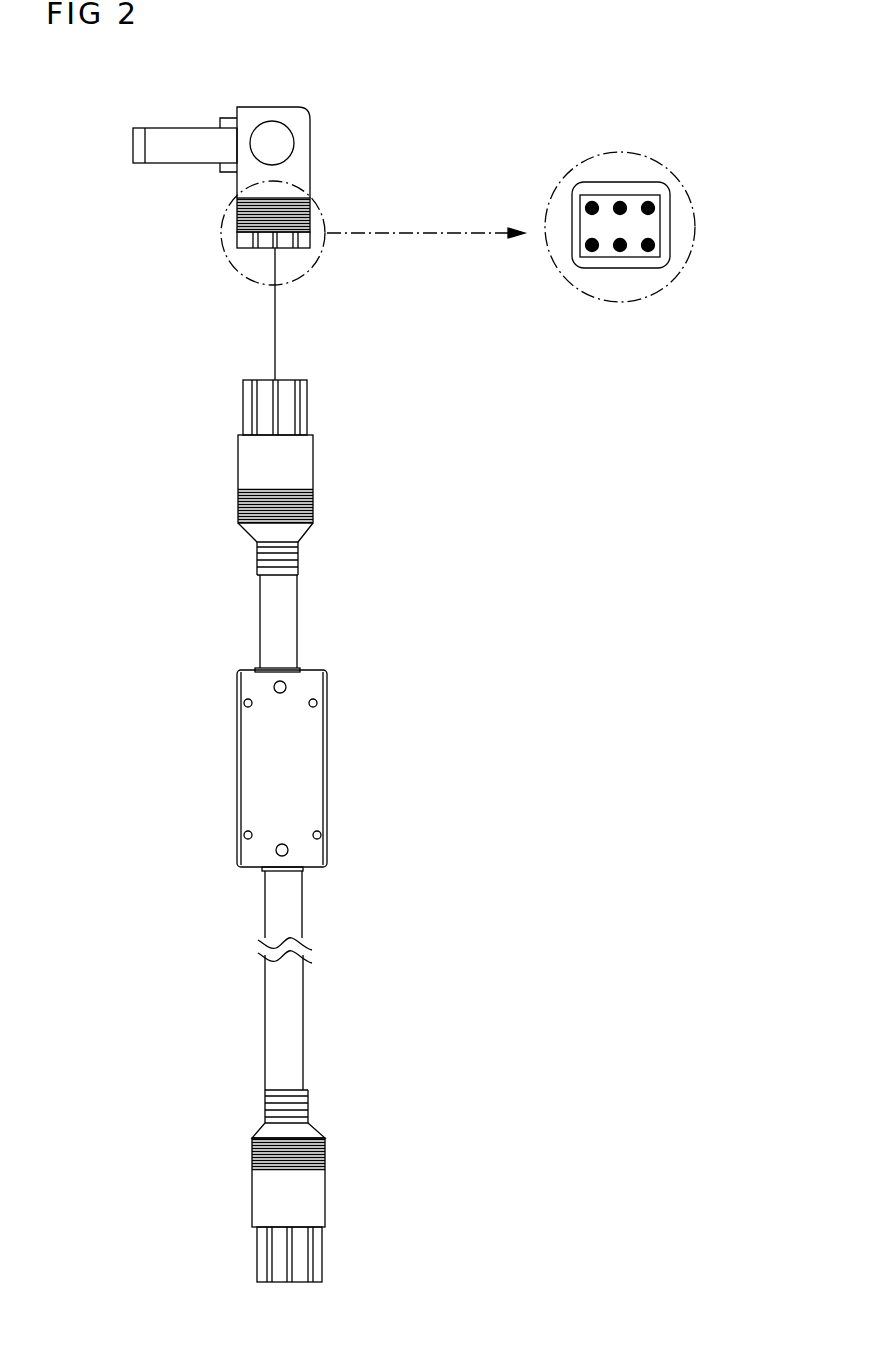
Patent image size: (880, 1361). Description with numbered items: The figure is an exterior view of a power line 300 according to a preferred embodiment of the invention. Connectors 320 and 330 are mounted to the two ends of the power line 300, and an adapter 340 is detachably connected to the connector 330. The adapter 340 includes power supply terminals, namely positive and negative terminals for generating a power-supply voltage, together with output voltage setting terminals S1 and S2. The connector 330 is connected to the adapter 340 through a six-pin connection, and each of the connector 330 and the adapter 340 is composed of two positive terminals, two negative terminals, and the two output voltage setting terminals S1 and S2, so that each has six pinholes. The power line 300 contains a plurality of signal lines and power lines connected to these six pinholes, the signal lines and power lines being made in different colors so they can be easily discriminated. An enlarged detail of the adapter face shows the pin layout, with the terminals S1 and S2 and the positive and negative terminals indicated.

The power line 300 is at (350, 787).
The connector 320 is at (322, 1260).
The connector 330 is at (307, 400).
The adapter 340 is at (210, 191).
The output voltage setting terminal S1 is at (590, 205).
The output voltage setting terminal S2 is at (593, 248).